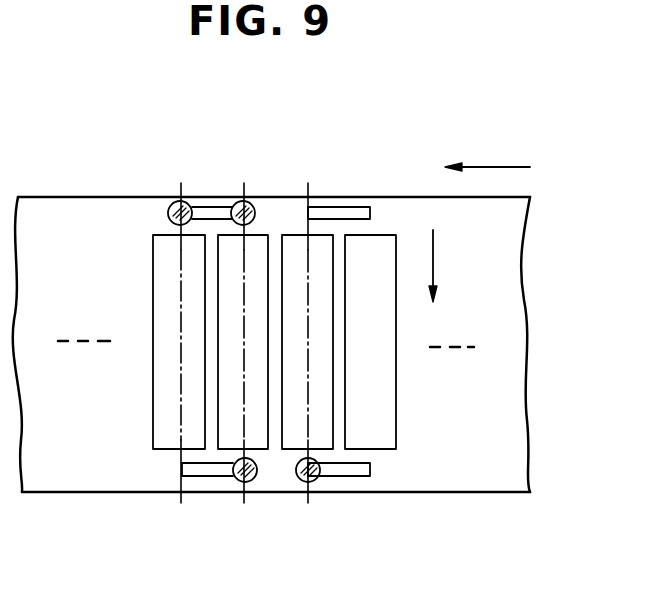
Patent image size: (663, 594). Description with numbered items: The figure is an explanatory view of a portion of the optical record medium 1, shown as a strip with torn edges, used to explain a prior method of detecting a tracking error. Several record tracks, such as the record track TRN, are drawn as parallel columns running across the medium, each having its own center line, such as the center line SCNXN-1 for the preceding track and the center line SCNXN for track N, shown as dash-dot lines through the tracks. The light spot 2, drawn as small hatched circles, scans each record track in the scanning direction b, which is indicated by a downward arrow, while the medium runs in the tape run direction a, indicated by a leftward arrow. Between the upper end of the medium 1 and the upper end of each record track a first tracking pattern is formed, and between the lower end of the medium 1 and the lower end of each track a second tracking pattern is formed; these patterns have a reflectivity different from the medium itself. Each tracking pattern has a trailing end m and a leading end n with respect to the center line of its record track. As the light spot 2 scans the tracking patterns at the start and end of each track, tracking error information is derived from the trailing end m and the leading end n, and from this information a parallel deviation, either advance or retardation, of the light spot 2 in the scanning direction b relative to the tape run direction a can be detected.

The optical record medium 1 is at (516, 279).
The light spot 2 is at (224, 334).
The tape run direction a is at (497, 163).
The scanning direction b is at (435, 262).
The trailing end m is at (168, 212).
The leading end n is at (256, 212).
The record track TRN is at (226, 366).
The center line of record track SCNXN-1 is at (182, 309).
The center line of record track SCNXN is at (244, 496).